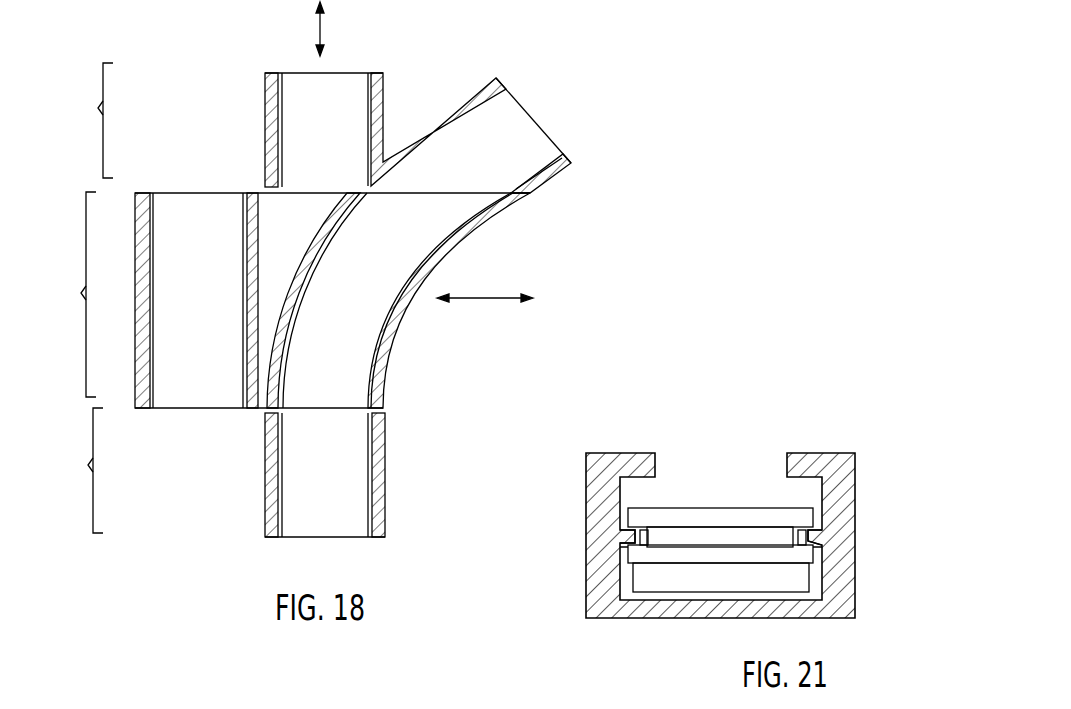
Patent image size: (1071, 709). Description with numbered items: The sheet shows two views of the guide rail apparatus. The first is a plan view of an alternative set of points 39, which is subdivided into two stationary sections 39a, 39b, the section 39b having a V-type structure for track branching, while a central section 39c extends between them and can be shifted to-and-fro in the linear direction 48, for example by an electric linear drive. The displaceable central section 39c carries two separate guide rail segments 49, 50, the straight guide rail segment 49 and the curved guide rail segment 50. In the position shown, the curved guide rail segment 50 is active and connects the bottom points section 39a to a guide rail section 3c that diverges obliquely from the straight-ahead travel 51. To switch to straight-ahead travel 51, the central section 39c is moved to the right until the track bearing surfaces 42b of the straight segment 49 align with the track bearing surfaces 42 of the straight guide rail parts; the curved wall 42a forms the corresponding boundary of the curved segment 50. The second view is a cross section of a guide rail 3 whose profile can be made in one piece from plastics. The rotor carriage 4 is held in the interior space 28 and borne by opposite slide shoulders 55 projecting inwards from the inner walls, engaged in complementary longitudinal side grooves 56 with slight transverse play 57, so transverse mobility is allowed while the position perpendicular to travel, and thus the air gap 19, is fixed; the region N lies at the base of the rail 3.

In FIG. 18, the guide rail 3 is at (265, 97).
In FIG. 21, the guide rail 3 is at (816, 440).
In FIG. 18, the track bearing surfaces 42 is at (368, 115).
In FIG. 18, the guide rail section 3c is at (481, 91).
In FIG. 18, the set of points 39 is at (411, 341).
In FIG. 18, the track bearing surfaces 42b is at (245, 245).
In FIG. 18, the curved partition wall 42a is at (430, 259).
In FIG. 18, the straight guide rail segment 49 is at (210, 329).
In FIG. 18, the curved guide rail segment 50 is at (353, 327).
In FIG. 18, the linear direction 48 is at (496, 297).
In FIG. 18, the straight-ahead travel 51 is at (323, 26).
In FIG. 18, the bottom points section 39a is at (71, 470).
In FIG. 18, the stationary points section 39b is at (81, 120).
In FIG. 18, the central section 39c is at (66, 294).
In FIG. 21, the rotor carriage 4 is at (763, 498).
In FIG. 21, the interior space 28 is at (728, 497).
In FIG. 21, the slide shoulders 55 is at (627, 533).
In FIG. 21, the longitudinal side grooves 56 is at (809, 535).
In FIG. 21, the transverse play 57 is at (645, 541).
In FIG. 21, the air gap 19 is at (685, 598).
In FIG. 21, the tray N is at (732, 578).